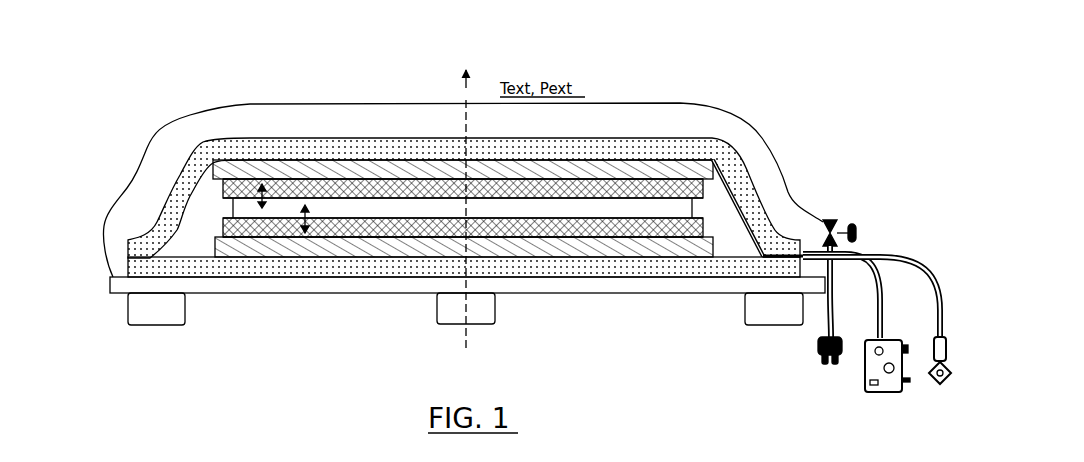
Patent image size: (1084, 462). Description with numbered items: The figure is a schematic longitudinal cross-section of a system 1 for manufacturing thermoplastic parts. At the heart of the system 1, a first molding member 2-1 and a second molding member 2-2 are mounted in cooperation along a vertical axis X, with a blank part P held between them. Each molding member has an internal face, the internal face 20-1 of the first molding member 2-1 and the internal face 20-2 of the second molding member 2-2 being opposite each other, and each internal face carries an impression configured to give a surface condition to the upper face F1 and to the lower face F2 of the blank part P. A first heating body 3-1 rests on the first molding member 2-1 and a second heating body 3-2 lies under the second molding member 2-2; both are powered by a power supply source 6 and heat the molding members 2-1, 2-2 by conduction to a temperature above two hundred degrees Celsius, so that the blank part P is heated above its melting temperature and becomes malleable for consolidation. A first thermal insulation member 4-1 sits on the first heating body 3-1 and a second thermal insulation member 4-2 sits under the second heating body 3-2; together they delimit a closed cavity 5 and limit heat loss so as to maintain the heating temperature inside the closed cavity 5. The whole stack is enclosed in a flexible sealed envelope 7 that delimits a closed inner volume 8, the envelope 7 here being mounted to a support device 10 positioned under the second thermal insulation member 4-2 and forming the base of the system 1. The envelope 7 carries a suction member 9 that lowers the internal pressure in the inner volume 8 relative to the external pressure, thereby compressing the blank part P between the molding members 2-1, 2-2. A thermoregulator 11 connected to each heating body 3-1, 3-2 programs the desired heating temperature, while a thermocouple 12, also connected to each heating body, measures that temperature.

The manufacturing system 1 is at (398, 84).
The flexible sealed envelope 7 is at (188, 118).
The first thermal insulation member 4-1 is at (192, 150).
The first heating body 3-1 is at (213, 168).
The first molding member 2-1 is at (223, 190).
The blank part P is at (233, 208).
The second molding member 2-2 is at (223, 228).
The second heating body 3-2 is at (216, 248).
The second thermal insulation member 4-2 is at (130, 265).
The support device 10 is at (128, 310).
The upper face F1 is at (260, 186).
The lower face F2 is at (305, 234).
The internal face 20-2 is at (303, 190).
The internal face 20-1 is at (247, 238).
The closed inner volume 8 is at (778, 180).
The closed cavity 5 is at (726, 222).
The suction member 9 is at (858, 232).
The power supply source 6 is at (826, 368).
The thermoregulator 11 is at (882, 394).
The thermocouple 12 is at (940, 386).
The vertical axis X is at (465, 197).